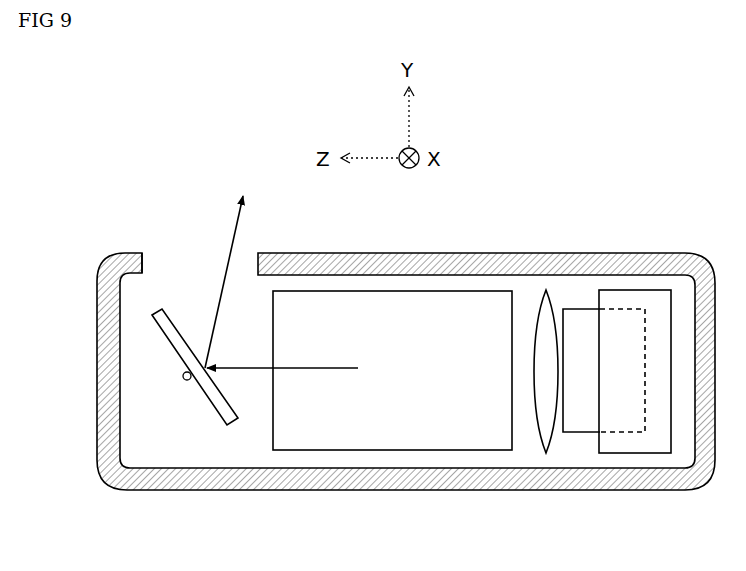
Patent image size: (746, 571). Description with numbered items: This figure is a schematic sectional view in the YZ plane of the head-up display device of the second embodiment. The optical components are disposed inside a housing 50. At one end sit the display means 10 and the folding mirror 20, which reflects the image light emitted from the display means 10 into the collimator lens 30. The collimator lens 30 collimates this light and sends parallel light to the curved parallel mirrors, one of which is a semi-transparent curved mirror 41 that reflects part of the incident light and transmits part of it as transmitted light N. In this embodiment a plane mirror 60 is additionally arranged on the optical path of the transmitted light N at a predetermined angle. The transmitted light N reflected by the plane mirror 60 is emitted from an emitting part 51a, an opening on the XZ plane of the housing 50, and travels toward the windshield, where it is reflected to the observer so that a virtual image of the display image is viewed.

The housing 50 is at (458, 490).
The emitting part 51a is at (163, 262).
The semi-transparent curved mirror 41 is at (412, 291).
The transmitted light N is at (333, 368).
The collimator lens 30 is at (547, 290).
The display means 10 is at (580, 309).
The folding mirror 20 is at (630, 290).
The plane mirror 60 is at (220, 418).